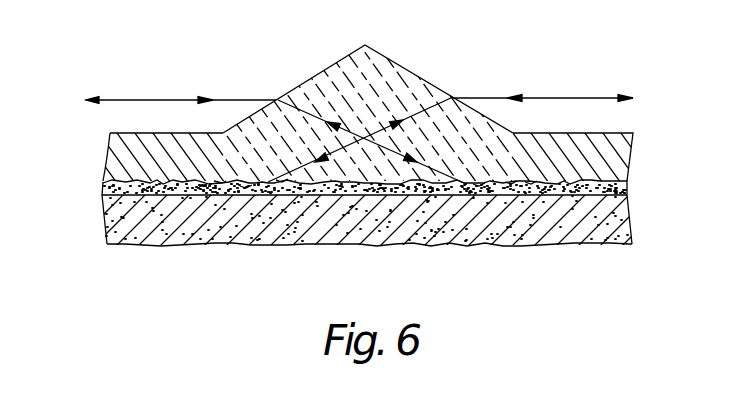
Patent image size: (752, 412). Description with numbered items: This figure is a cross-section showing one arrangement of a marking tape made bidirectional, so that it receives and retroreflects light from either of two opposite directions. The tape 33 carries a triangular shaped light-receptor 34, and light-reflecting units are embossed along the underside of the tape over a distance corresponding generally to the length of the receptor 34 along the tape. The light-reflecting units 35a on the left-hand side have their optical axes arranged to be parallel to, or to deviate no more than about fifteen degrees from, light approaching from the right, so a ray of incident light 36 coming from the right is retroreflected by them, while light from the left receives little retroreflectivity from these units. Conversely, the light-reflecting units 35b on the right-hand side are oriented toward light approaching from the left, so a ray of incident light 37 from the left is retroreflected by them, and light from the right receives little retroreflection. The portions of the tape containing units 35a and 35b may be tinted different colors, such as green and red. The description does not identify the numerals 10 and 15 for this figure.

The substrate 10 is at (630, 218).
The particle layer 15 is at (627, 185).
The tape 33 is at (622, 155).
The light-receptor 34 is at (392, 78).
The light-reflecting units 35a is at (280, 181).
The light-reflecting units 35b is at (530, 183).
The ray of incident light 36 is at (547, 96).
The ray of incident light 37 is at (158, 97).